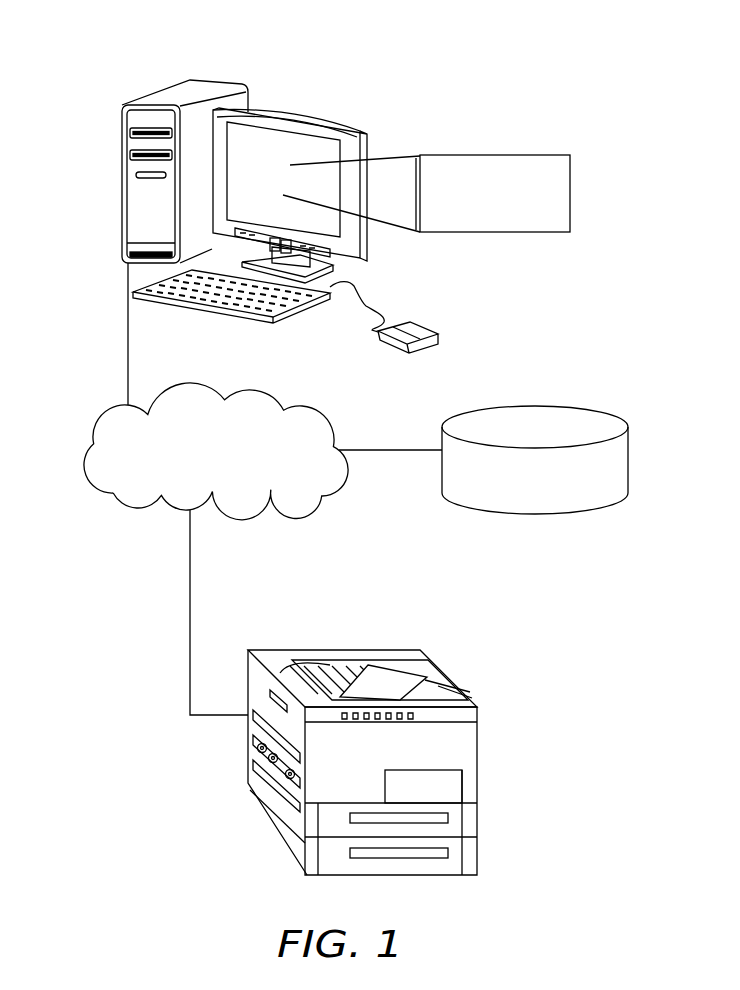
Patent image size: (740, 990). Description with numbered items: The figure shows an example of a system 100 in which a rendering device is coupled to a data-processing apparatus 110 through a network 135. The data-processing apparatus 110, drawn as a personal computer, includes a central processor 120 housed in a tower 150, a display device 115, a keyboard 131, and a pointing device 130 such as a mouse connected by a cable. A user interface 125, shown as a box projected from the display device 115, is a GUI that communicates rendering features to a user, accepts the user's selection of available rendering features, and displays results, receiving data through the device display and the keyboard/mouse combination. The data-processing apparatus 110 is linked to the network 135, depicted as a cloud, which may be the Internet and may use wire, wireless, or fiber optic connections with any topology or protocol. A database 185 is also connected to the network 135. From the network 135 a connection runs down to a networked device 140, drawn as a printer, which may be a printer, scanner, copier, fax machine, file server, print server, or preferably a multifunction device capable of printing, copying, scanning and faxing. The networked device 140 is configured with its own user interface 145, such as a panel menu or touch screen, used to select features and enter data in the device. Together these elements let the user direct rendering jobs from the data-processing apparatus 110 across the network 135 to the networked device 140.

The system 100 is at (442, 58).
The data-processing apparatus 110 is at (290, 112).
The display device 115 is at (310, 147).
The central processor 120 is at (123, 257).
The user interface 125 is at (517, 155).
The pointing device 130 is at (417, 327).
The keyboard 131 is at (203, 307).
The network 135 is at (247, 393).
The networked device 140 is at (378, 650).
The user interface 145 is at (430, 677).
The computer tower 150 is at (153, 92).
The database 185 is at (572, 407).